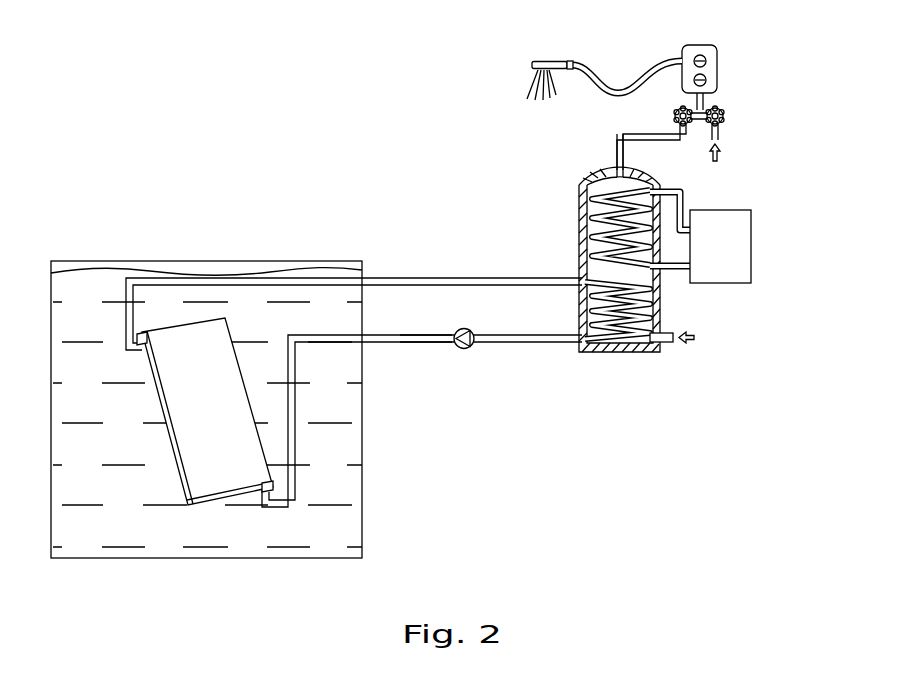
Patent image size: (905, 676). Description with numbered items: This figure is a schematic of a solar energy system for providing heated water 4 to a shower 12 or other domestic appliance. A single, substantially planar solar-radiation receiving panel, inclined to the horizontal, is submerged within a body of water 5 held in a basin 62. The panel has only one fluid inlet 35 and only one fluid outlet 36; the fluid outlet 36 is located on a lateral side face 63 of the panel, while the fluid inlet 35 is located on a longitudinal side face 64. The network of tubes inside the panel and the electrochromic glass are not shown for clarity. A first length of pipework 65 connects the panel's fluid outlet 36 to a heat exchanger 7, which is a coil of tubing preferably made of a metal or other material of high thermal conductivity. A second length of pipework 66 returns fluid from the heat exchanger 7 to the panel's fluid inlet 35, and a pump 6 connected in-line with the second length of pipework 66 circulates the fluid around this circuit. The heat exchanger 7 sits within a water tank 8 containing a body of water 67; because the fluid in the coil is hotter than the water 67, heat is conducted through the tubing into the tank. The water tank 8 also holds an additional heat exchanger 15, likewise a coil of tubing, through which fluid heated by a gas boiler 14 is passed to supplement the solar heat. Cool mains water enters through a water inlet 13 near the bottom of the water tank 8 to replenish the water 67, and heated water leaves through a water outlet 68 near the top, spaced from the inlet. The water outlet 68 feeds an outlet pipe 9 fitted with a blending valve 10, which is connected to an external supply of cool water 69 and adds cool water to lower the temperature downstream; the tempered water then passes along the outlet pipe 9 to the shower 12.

The water basin 62 is at (74, 246).
The body of water 5 is at (198, 418).
The lateral side face 63 is at (168, 440).
The longitudinal side face 64 is at (225, 497).
The fluid outlet 36 is at (145, 340).
The fluid inlet 35 is at (261, 488).
The first length of pipework 65 is at (444, 277).
The heated water 4 is at (521, 349).
The second length of pipework 66 is at (435, 333).
The pump 6 is at (465, 352).
The water tank 8 is at (661, 312).
The additional heat exchanger 15 is at (603, 194).
The water 67 is at (593, 270).
The heat exchanger 7 is at (591, 311).
The gas boiler 14 is at (751, 232).
The water inlet 13 is at (668, 345).
The water outlet 68 is at (616, 167).
The outlet pipe 9 is at (650, 134).
The external supply of cool water 69 is at (722, 148).
The blending valve 10 is at (725, 115).
The shower 12 is at (531, 63).